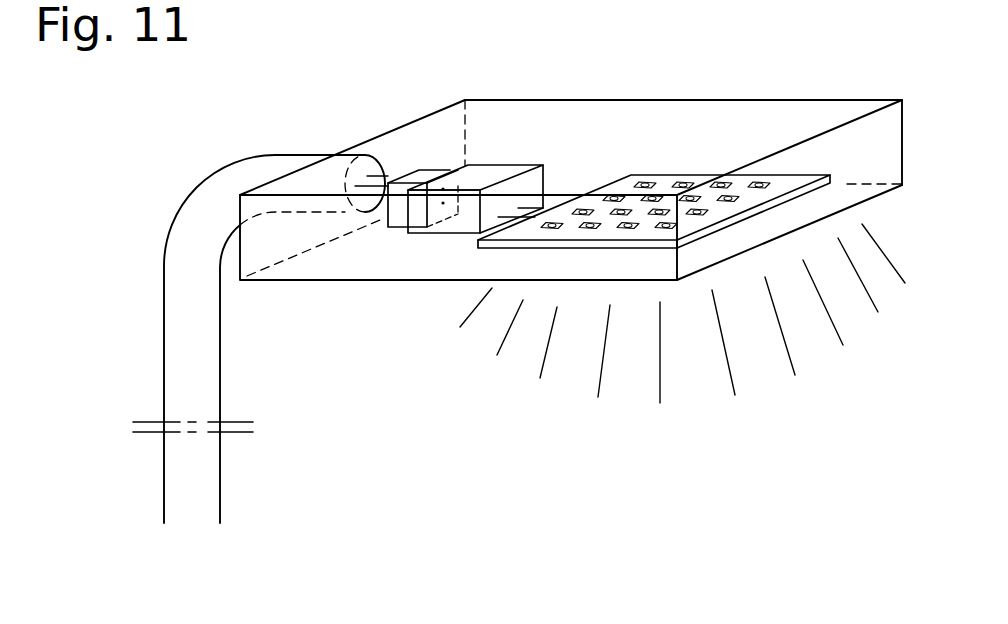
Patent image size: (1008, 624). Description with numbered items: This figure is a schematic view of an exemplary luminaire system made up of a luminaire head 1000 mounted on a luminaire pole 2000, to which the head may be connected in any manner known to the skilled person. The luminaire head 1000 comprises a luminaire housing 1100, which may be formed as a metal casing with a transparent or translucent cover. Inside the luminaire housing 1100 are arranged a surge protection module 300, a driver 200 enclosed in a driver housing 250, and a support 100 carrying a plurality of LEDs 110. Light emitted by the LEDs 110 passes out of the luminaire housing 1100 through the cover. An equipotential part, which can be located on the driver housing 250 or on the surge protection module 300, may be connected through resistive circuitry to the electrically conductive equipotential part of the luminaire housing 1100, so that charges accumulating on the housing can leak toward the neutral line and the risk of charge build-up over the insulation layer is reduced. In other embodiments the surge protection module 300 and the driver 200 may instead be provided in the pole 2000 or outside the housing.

The luminaire head 1000 is at (352, 123).
The luminaire housing 1100 is at (372, 247).
The luminaire pole 2000 is at (192, 343).
The surge protection module 300 is at (427, 152).
The driver 200 is at (478, 168).
The driver housing 250 is at (522, 178).
The support 100 is at (704, 175).
The LEDs 110 is at (648, 180).